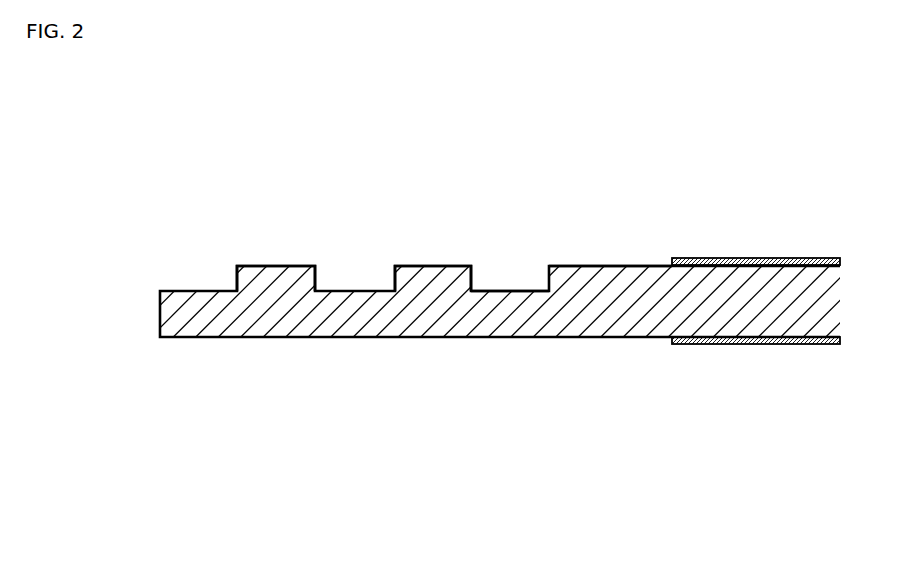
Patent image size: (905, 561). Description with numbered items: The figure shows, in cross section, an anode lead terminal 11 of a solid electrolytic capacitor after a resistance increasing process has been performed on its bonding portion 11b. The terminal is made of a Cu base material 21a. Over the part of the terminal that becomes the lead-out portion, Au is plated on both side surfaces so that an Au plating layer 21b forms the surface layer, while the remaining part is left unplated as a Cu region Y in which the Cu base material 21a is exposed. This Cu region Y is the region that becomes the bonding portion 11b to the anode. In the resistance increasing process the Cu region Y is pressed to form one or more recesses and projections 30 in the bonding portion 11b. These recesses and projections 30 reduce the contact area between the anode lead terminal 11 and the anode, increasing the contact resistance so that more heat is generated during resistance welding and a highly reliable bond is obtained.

The anode lead terminal 11 is at (542, 387).
The bonding portion 11b is at (500, 210).
The recesses and projections 30 is at (470, 256).
The Cu base material 21a is at (615, 264).
The Au plating layer 21b is at (758, 258).
The Cu region Y is at (432, 345).